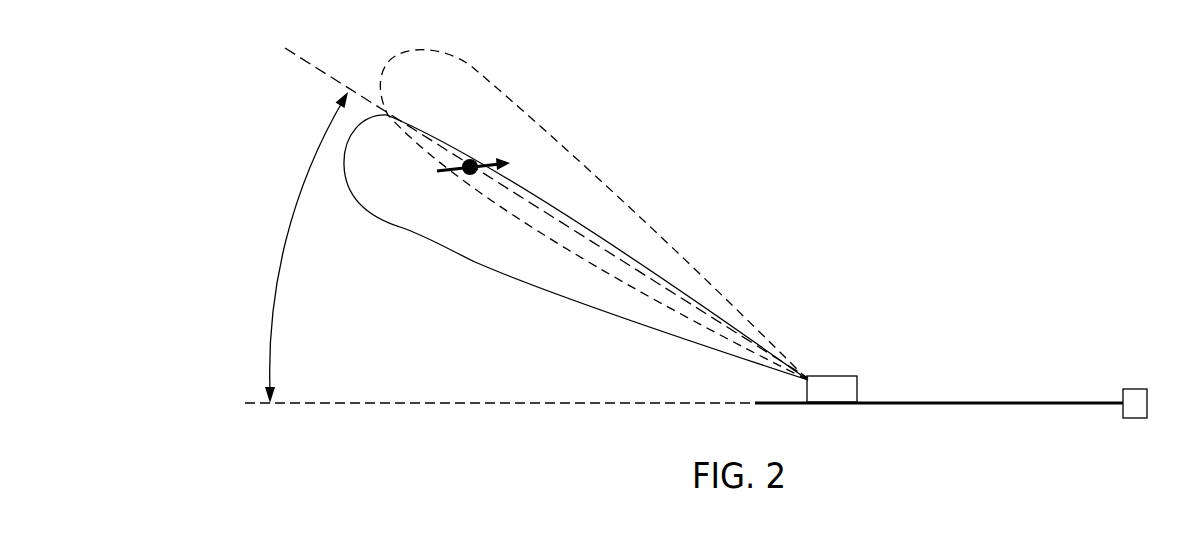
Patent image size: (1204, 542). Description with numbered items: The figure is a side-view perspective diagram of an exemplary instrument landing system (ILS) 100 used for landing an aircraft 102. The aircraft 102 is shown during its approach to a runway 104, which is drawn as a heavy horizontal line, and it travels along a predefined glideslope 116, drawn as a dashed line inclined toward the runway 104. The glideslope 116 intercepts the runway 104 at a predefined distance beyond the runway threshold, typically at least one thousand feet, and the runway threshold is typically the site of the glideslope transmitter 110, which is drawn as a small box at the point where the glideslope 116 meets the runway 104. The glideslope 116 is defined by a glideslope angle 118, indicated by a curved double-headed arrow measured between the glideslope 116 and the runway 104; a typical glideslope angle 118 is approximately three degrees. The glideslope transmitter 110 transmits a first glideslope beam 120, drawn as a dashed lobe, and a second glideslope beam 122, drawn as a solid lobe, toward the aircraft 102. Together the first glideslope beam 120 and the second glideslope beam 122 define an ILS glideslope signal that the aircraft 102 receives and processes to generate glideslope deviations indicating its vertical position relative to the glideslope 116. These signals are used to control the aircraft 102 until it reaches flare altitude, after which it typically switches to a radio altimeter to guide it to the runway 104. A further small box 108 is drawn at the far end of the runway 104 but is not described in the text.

The instrument landing system 100 is at (948, 330).
The aircraft 102 is at (461, 173).
The runway 104 is at (1025, 402).
The controller 108 is at (1142, 389).
The glideslope transmitter 110 is at (847, 376).
The glideslope 116 is at (300, 58).
The glideslope angle 118 is at (283, 247).
The first glideslope beam 120 is at (578, 153).
The second glideslope beam 122 is at (437, 247).